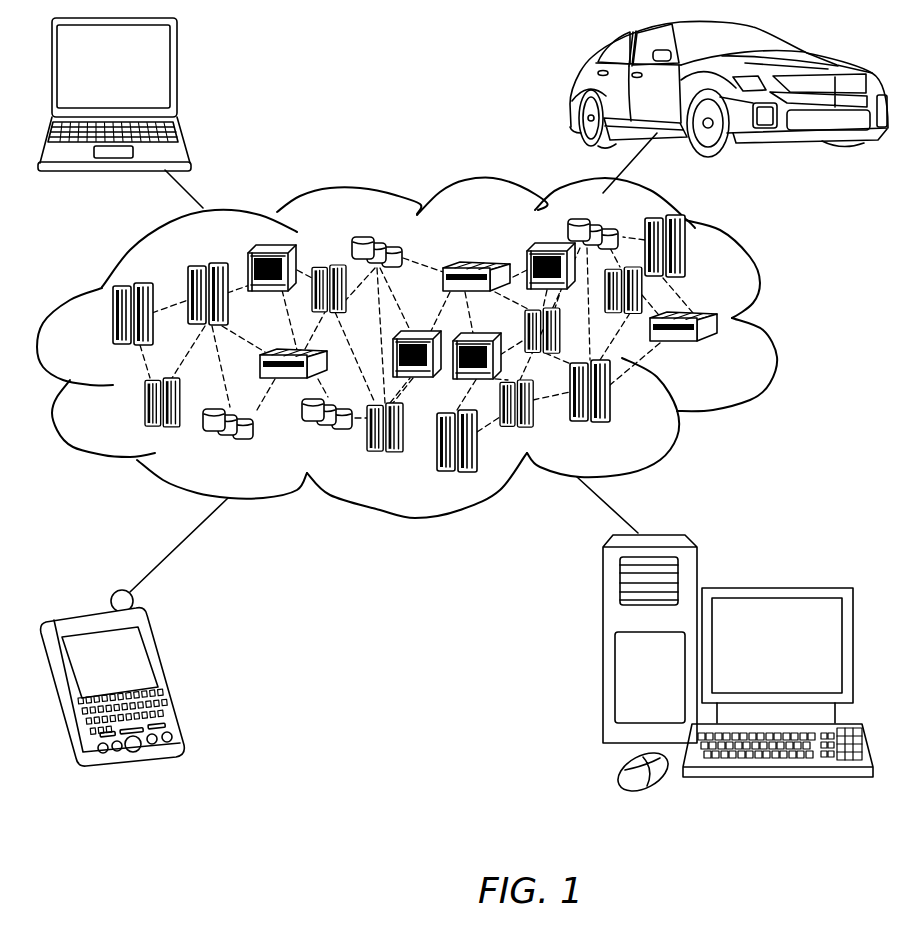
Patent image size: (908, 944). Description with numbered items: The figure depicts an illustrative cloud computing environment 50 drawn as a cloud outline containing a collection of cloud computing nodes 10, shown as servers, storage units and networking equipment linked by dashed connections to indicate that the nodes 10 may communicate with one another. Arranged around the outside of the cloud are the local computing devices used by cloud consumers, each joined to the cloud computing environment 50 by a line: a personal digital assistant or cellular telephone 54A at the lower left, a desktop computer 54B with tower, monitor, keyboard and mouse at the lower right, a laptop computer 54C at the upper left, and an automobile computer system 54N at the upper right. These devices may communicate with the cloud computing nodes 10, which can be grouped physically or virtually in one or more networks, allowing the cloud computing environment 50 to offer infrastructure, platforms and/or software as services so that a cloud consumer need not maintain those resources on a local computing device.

The cloud computing nodes 10 is at (721, 350).
The cloud computing environment 50 is at (777, 323).
The personal digital assistant (PDA) or cellular telephone 54A is at (168, 672).
The desktop computer 54B is at (773, 587).
The laptop computer 54C is at (178, 75).
The automobile computer system 54N is at (573, 89).